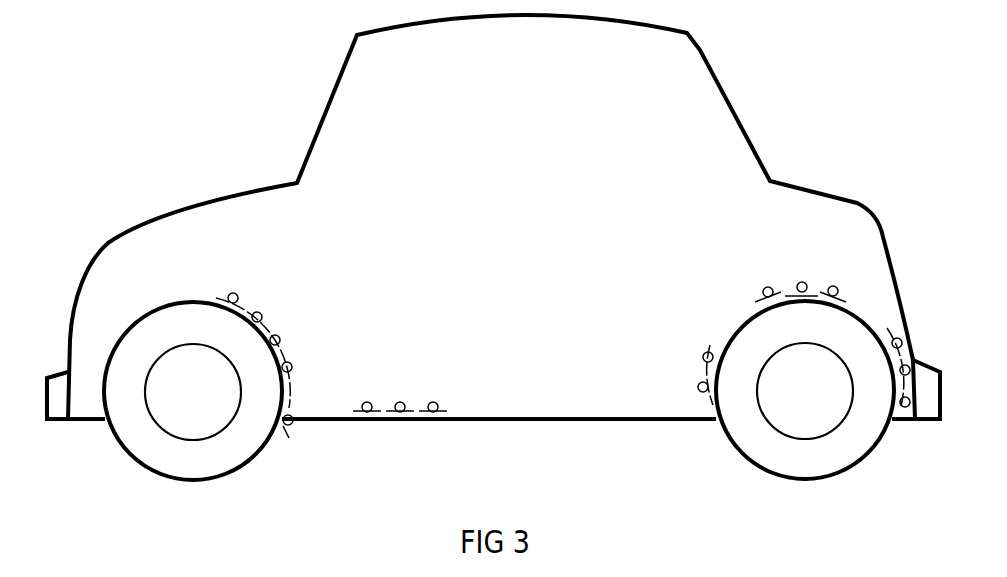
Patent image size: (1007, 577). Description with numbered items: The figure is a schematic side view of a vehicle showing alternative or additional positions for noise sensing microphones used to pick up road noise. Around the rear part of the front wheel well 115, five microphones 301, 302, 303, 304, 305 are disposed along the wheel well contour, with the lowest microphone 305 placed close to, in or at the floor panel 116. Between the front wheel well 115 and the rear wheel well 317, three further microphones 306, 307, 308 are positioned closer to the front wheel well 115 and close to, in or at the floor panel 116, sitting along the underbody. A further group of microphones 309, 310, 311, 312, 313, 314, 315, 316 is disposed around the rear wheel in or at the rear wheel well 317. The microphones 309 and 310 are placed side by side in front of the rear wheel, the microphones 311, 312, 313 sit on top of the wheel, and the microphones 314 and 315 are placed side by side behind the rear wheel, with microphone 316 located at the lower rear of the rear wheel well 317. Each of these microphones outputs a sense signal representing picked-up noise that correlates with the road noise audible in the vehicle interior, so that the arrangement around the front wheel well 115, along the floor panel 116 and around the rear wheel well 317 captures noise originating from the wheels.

The front wheel well 115 is at (160, 306).
The floor panel 116 is at (578, 423).
The noise sensing microphone 301 is at (239, 296).
The noise sensing microphone 302 is at (263, 316).
The noise sensing microphone 303 is at (281, 340).
The noise sensing microphone 304 is at (293, 366).
The noise sensing microphone 305 is at (292, 415).
The noise sensing microphone 306 is at (367, 401).
The noise sensing microphone 307 is at (400, 401).
The noise sensing microphone 308 is at (433, 401).
The noise sensing microphone 309 is at (697, 387).
The noise sensing microphone 310 is at (702, 357).
The noise sensing microphone 311 is at (767, 287).
The noise sensing microphone 312 is at (802, 282).
The noise sensing microphone 313 is at (834, 286).
The noise sensing microphone 314 is at (893, 339).
The noise sensing microphone 315 is at (910, 366).
The noise sensing microphone 316 is at (908, 410).
The rear wheel well 317 is at (733, 340).